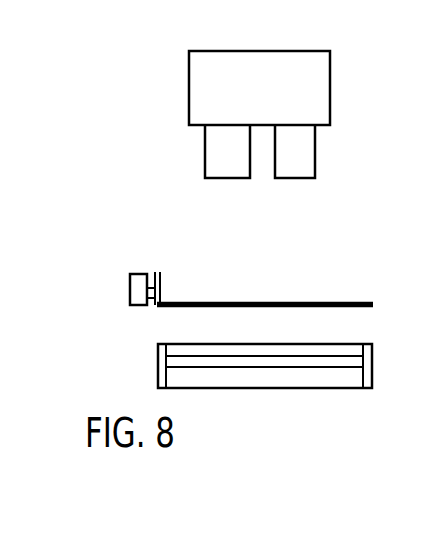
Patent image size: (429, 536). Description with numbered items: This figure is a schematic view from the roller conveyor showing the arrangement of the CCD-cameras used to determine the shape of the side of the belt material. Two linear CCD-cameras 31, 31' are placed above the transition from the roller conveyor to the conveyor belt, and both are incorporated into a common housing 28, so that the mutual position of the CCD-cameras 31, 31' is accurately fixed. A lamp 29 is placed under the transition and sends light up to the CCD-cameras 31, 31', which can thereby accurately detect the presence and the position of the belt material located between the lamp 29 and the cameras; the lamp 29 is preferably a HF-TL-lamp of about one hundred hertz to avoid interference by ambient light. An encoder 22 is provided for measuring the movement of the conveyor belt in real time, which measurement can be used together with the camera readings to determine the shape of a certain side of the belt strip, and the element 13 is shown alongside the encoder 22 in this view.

The common housing 28 is at (303, 62).
The linear CCD-camera 31 is at (197, 151).
The linear CCD-camera 31' is at (323, 151).
The encoder 22 is at (138, 282).
The flat cable 13 is at (347, 300).
The lamp 29 is at (367, 360).